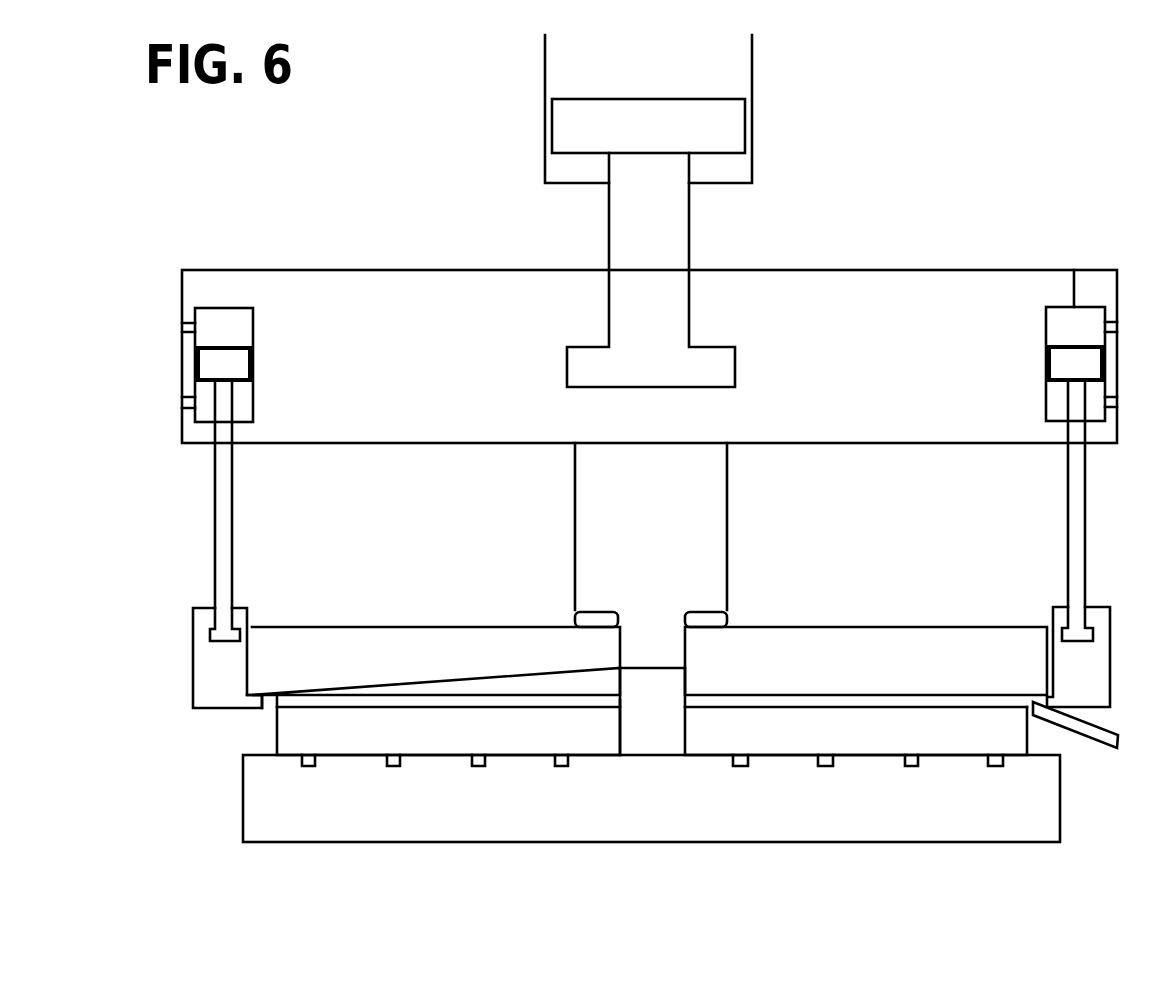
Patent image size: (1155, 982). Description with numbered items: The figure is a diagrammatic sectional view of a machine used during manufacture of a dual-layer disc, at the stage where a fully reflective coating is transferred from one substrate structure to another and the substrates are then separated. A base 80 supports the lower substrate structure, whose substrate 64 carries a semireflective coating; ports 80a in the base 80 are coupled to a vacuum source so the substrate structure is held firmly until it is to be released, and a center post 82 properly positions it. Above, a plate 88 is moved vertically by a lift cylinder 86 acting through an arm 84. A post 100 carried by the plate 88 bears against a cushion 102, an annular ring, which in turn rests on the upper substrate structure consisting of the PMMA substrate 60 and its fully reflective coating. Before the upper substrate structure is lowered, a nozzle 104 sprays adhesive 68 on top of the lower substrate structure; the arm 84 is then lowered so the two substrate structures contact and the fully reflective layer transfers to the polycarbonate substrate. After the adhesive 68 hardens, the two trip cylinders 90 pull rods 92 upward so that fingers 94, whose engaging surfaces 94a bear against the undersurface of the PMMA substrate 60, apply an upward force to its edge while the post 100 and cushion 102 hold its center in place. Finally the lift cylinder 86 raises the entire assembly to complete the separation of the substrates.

The PMMA substrate 60 is at (377, 627).
The substrate 64 is at (344, 742).
The adhesive 68 is at (484, 700).
The base 80 is at (242, 797).
The ports 80a is at (462, 795).
The center post 82 is at (618, 720).
The arm 84 is at (673, 225).
The lift cylinder 86 is at (763, 86).
The plate 88 is at (988, 285).
The trip cylinders 90 is at (262, 377).
The rods 92 is at (227, 527).
The fingers 94 is at (203, 655).
The engaging surfaces 94a is at (252, 700).
The post 100 is at (717, 518).
The cushion 102 is at (713, 620).
The nozzle 104 is at (1093, 733).